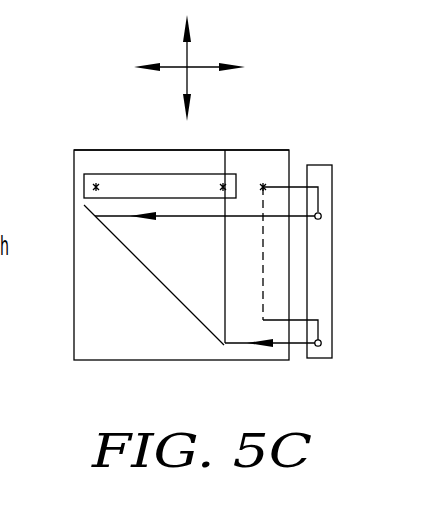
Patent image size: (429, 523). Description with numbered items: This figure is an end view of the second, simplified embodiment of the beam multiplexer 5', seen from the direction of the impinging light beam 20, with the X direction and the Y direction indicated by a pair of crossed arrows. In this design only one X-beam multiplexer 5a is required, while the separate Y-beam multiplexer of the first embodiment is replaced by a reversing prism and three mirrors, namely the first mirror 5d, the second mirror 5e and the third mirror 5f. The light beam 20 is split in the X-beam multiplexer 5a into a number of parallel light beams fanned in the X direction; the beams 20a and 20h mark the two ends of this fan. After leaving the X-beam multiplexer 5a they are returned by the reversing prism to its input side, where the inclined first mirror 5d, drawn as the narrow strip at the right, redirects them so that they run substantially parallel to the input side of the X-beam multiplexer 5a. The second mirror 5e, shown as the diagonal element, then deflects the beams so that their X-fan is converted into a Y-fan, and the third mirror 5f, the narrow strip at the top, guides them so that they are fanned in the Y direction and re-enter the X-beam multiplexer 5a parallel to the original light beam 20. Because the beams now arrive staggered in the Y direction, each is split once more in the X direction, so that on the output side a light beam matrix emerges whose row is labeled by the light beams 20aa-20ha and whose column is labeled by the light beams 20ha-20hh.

The beam multiplexer 5' is at (171, 288).
The X-beam multiplexer 5a is at (258, 159).
The first mirror 5d is at (330, 243).
The second mirror 5e is at (137, 258).
The third mirror 5f is at (84, 187).
The light beam 20 is at (263, 190).
The light beam 20a is at (293, 218).
The light beam 20h is at (321, 329).
The light beams 20aa-20ha is at (97, 216).
The light beams 20ha-20hh is at (223, 186).
The X-direction X is at (187, 50).
The Y-direction Y is at (208, 67).